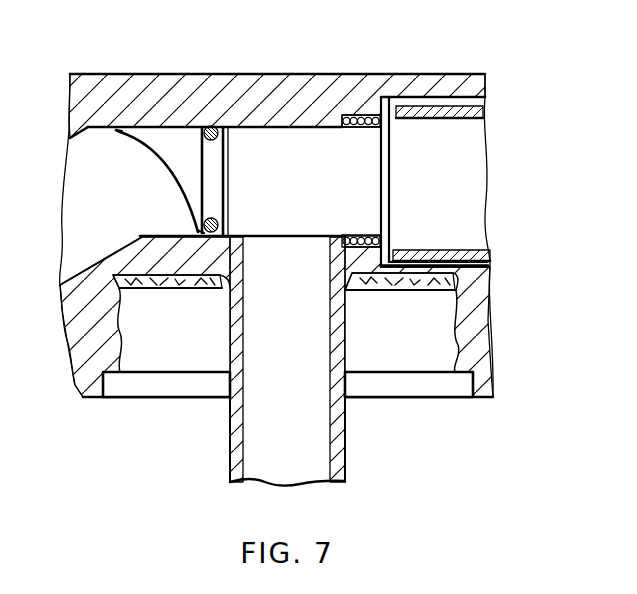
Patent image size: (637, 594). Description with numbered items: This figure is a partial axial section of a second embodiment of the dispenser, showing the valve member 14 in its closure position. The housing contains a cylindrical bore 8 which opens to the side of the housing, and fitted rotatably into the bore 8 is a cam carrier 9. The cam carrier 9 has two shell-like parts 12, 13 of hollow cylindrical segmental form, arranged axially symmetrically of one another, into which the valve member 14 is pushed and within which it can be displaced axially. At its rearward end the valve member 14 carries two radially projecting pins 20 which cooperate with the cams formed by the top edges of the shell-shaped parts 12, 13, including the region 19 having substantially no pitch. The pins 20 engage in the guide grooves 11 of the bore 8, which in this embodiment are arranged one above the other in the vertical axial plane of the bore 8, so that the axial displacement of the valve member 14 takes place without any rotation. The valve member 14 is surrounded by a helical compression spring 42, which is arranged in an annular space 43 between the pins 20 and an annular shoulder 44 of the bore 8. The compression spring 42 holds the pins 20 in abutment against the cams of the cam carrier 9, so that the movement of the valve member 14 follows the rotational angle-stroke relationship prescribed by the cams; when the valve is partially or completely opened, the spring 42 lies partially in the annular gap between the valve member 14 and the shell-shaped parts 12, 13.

The cylindrical bore 8 is at (340, 233).
The cam carrier 9 is at (443, 248).
The guide grooves 11 is at (482, 107).
The shell-like part 12 is at (453, 112).
The shell-like part 13 is at (487, 260).
The valve member 14 is at (278, 182).
The region having substantially no pitch 19 is at (397, 257).
The pins 20 is at (398, 96).
The helical compression spring 42 is at (373, 120).
The annular space 43 is at (353, 120).
The annular shoulder 44 is at (340, 121).